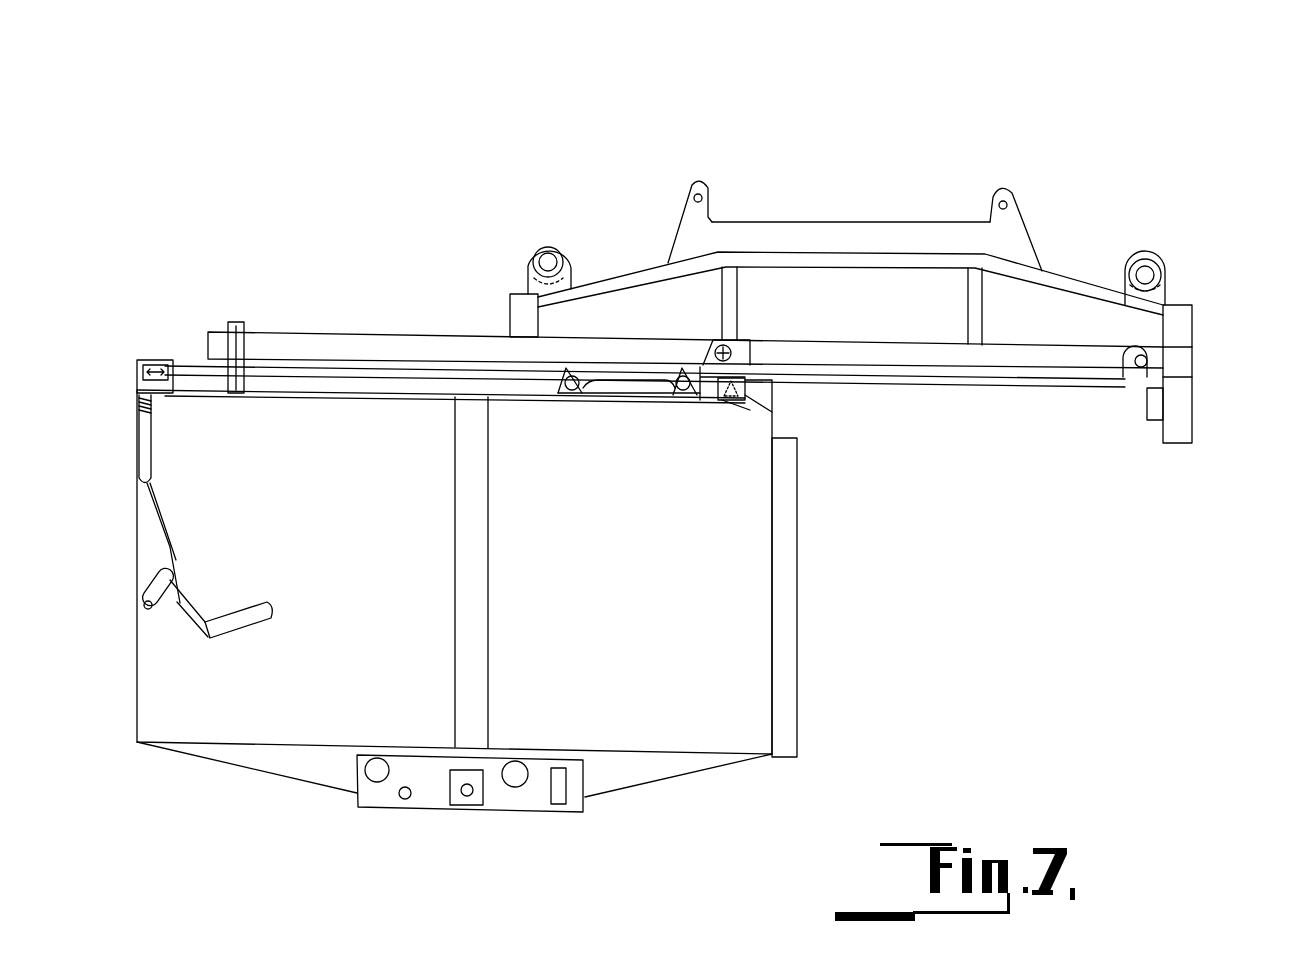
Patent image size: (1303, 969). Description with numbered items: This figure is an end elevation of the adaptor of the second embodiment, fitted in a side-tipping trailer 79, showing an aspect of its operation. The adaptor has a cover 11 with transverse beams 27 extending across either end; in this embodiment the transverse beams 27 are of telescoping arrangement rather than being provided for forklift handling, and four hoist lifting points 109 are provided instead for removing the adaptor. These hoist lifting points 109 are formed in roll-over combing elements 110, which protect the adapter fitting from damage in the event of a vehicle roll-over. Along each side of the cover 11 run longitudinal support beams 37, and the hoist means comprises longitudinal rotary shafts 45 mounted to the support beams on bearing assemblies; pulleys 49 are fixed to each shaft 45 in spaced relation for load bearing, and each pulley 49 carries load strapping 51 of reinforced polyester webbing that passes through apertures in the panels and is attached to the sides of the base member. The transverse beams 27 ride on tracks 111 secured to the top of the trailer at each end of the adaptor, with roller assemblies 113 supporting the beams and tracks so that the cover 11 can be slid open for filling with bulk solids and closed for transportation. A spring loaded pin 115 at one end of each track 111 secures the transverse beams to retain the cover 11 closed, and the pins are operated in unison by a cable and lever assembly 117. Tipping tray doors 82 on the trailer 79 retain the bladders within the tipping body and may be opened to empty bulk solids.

The cover 11 is at (914, 188).
The transverse beams 27 is at (345, 333).
The longitudinal support beams 37 is at (517, 310).
The longitudinal rotary shafts 45 is at (558, 250).
The pulleys 49 is at (546, 250).
The load strapping 51 is at (527, 288).
The side-tipping trailer 79 is at (620, 702).
The tipping tray doors 82 is at (800, 543).
The hoist lifting points 109 is at (706, 188).
The roll-over combing elements 110 is at (820, 220).
The tracks 111 is at (193, 367).
The roller assemblies 113 is at (740, 343).
The spring loaded pin 115 is at (138, 452).
The cable and lever assembly 117 is at (163, 530).